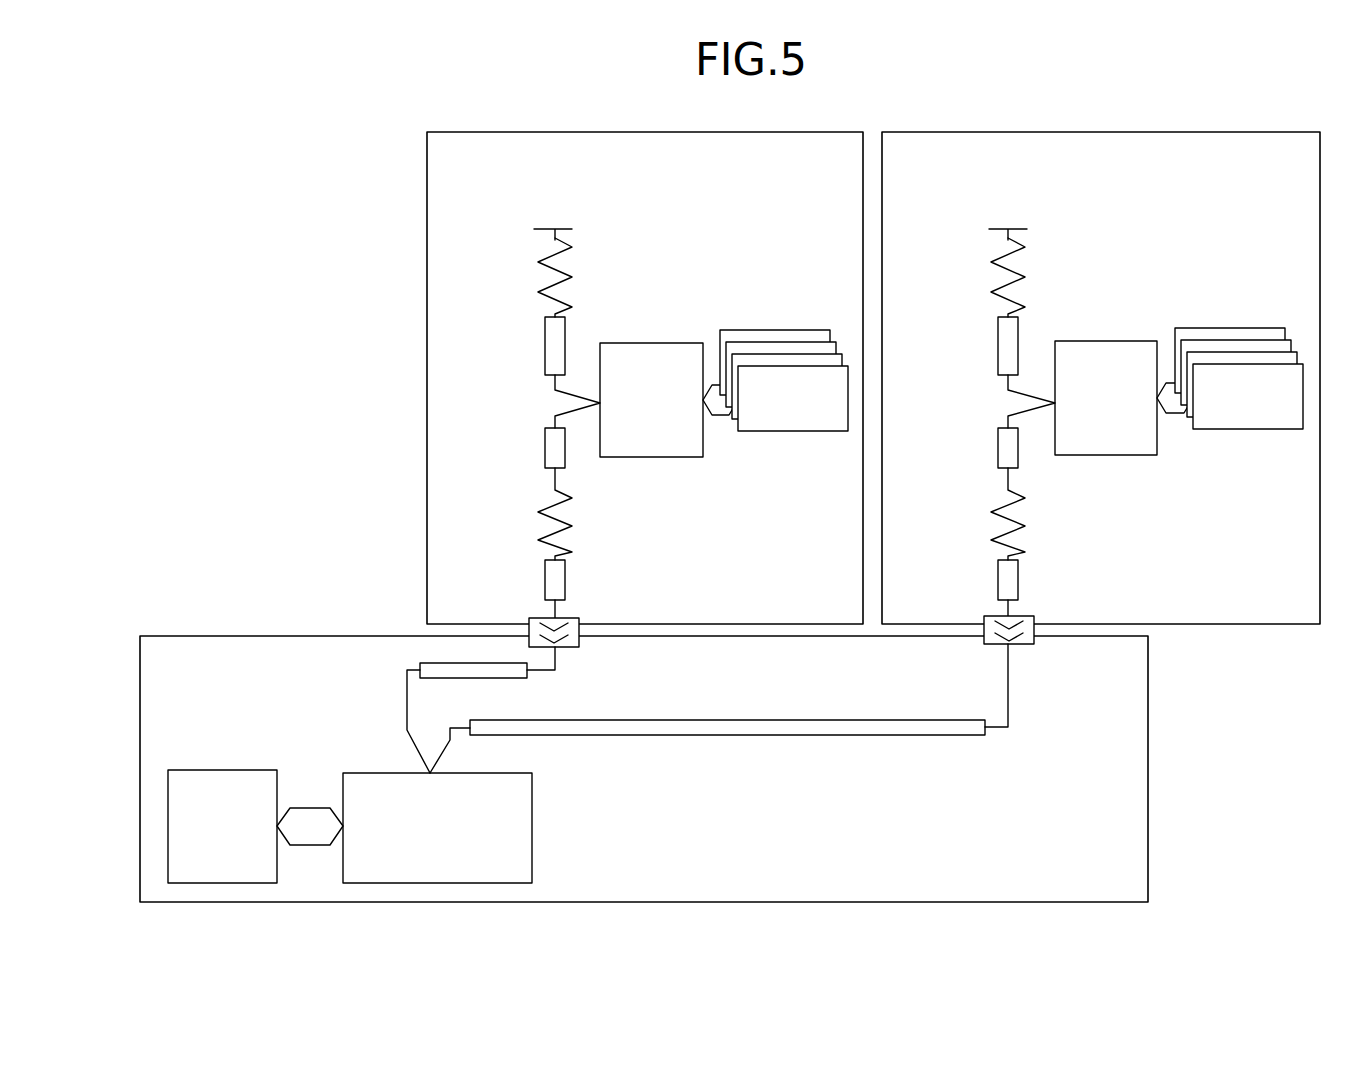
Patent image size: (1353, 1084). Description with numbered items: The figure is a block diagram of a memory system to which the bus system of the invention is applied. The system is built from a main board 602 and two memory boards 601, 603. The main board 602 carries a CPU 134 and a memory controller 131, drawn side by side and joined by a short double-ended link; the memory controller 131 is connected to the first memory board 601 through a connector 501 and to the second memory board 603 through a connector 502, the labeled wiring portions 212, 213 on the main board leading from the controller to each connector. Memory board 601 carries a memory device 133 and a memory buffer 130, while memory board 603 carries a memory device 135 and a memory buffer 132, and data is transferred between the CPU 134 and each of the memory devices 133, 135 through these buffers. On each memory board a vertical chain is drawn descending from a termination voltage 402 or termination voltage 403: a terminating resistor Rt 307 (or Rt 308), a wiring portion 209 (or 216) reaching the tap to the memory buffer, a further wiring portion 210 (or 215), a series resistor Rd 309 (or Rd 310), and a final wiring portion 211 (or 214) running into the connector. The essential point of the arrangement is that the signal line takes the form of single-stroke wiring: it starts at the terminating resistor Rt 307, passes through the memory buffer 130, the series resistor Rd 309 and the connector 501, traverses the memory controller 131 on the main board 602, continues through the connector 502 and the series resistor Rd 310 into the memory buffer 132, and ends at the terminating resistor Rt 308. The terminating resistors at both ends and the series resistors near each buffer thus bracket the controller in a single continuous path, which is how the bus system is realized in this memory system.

The memory buffer 130 is at (653, 343).
The memory controller 131 is at (532, 826).
The memory buffer 132 is at (1108, 341).
The memory device 133 is at (759, 340).
The CPU 134 is at (199, 770).
The memory device 135 is at (1217, 338).
The transmission line 209 is at (545, 348).
The transmission line 210 is at (545, 453).
The transmission line 211 is at (545, 586).
The bus 212 is at (425, 661).
The bus 213 is at (801, 719).
The transmission line 214 is at (998, 586).
The transmission line 215 is at (998, 453).
The transmission line 216 is at (998, 348).
The terminating resistor Rt 307 is at (541, 271).
The terminating resistor Rt 308 is at (996, 271).
The series resistor Rd 309 is at (541, 524).
The series resistor Rd 310 is at (996, 524).
The termination voltage Vtt 402 is at (542, 228).
The termination voltage Vtt 403 is at (995, 228).
The connector 501 is at (577, 618).
The connector 502 is at (1030, 618).
The memory board 601 is at (427, 410).
The main board 602 is at (1148, 762).
The memory board 603 is at (1200, 624).